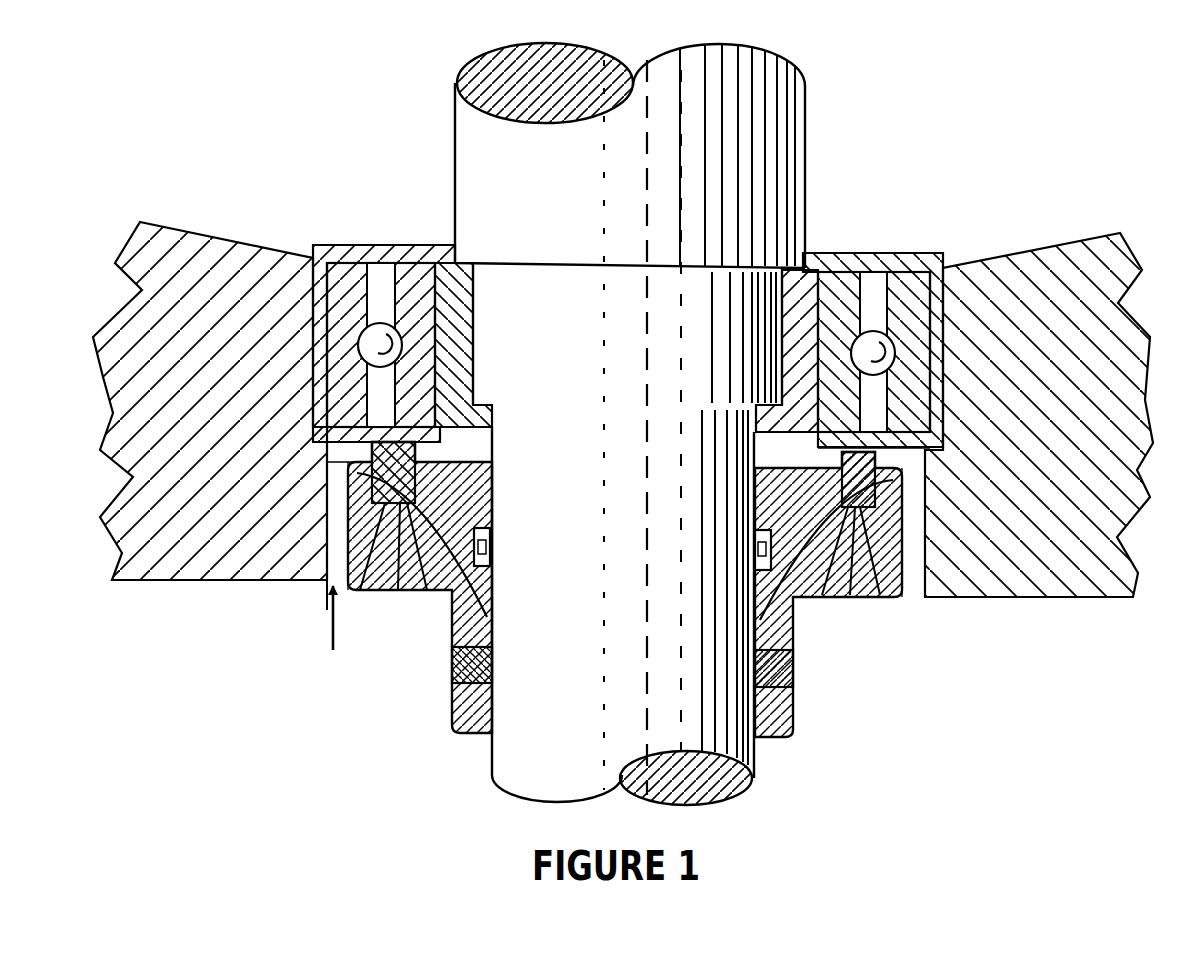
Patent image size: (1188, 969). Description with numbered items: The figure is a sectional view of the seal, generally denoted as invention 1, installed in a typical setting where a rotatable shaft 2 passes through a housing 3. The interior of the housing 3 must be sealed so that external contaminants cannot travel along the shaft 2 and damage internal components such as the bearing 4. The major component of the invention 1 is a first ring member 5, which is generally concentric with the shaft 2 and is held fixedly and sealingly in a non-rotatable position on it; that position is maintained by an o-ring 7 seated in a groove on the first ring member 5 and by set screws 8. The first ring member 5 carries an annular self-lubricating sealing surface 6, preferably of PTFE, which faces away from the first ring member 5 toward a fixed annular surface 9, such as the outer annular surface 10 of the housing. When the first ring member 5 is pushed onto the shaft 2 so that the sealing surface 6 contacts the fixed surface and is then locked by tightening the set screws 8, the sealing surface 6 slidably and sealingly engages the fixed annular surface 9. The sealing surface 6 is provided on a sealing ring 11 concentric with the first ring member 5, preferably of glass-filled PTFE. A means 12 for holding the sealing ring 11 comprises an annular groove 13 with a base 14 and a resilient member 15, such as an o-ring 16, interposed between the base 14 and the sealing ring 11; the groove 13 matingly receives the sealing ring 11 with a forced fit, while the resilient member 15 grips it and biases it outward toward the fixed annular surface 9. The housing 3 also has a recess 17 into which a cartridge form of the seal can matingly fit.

The invention 1 is at (922, 690).
The shaft 2 is at (754, 762).
The housing 3 is at (215, 583).
The bearing 4 is at (338, 207).
The first ring member 5 is at (450, 650).
The self-lubricating sealing surface 6 is at (323, 580).
The o-ring 7 is at (492, 556).
The set screws 8 is at (450, 700).
The fixed annular surface 9 is at (447, 448).
The outer annular surface 10 is at (323, 470).
The sealing ring 11 is at (485, 488).
The means for holding a sealing ring 12 is at (362, 592).
The annular groove 13 is at (338, 482).
The base 14 is at (405, 592).
The resilient member 15 is at (470, 560).
The o-ring 16 is at (772, 560).
The recess 17 is at (331, 633).